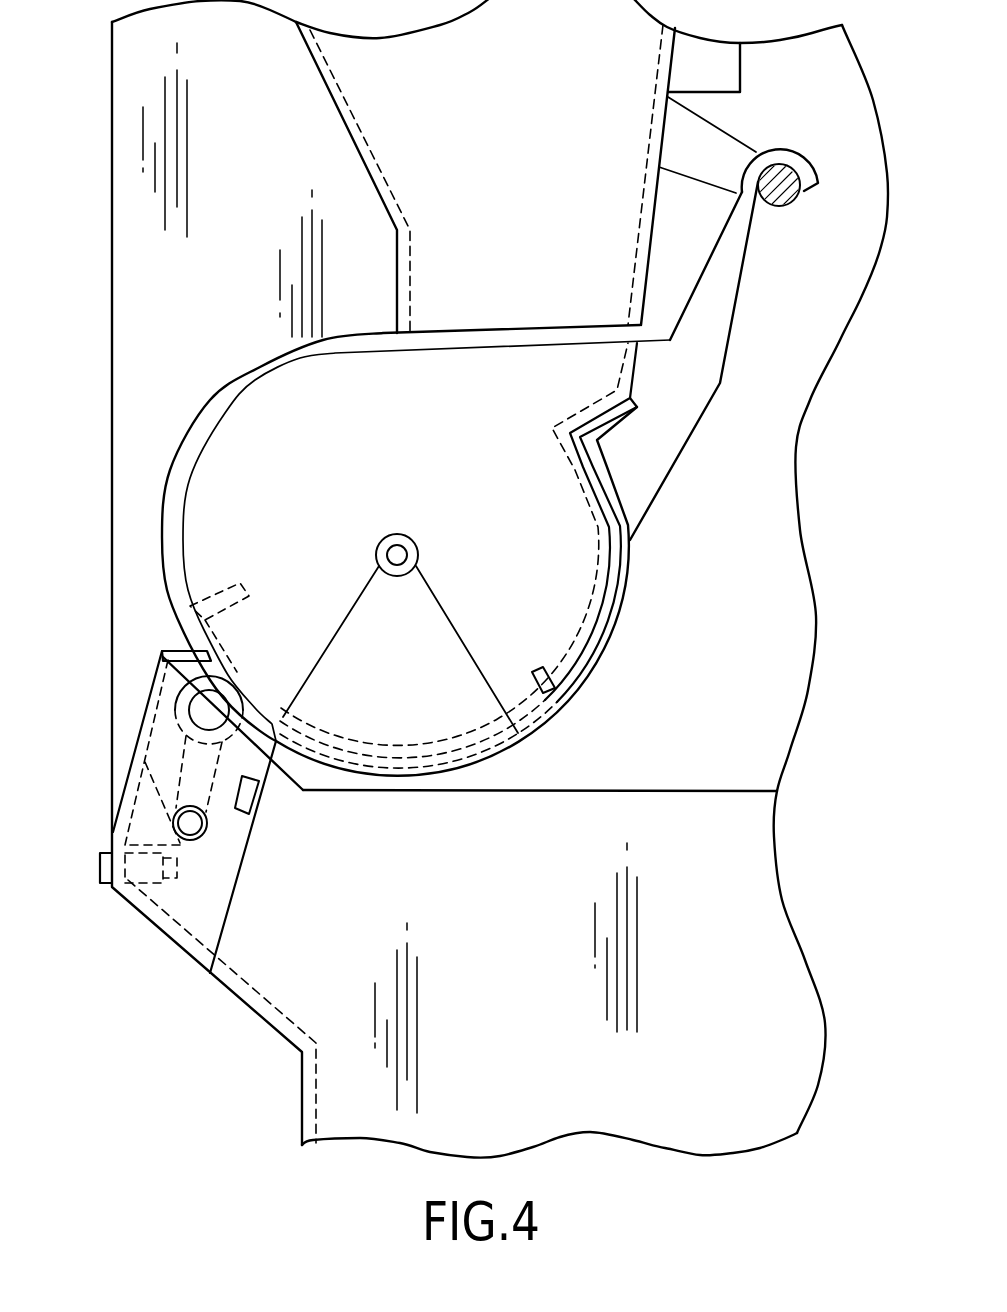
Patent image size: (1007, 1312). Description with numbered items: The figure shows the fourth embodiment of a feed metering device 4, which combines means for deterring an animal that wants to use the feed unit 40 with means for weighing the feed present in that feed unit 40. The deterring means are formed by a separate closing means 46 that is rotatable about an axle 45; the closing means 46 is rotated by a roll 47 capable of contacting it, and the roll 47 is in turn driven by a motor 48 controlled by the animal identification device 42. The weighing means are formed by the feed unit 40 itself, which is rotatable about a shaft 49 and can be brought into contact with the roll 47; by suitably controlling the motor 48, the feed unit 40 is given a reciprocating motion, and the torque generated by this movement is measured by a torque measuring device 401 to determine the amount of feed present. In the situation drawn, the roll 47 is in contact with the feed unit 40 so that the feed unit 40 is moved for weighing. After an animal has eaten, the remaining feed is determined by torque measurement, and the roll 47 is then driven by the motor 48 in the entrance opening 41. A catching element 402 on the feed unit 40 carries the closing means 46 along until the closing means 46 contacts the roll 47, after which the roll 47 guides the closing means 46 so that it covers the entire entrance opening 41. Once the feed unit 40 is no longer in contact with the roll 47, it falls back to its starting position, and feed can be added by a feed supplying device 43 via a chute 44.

The feed metering device 4 is at (657, 510).
The feed unit 40 is at (597, 660).
The entrance opening 41 is at (273, 378).
The animal identification device 42 is at (182, 911).
The feed supplying device 43 is at (727, 77).
The chute 44 is at (377, 133).
The axle 45 is at (419, 551).
The closing means 46 is at (410, 691).
The roll 47 is at (232, 682).
The motor 48 is at (207, 828).
The shaft 49 is at (783, 207).
The torque measuring device 401 is at (258, 795).
The catching element 402 is at (537, 663).